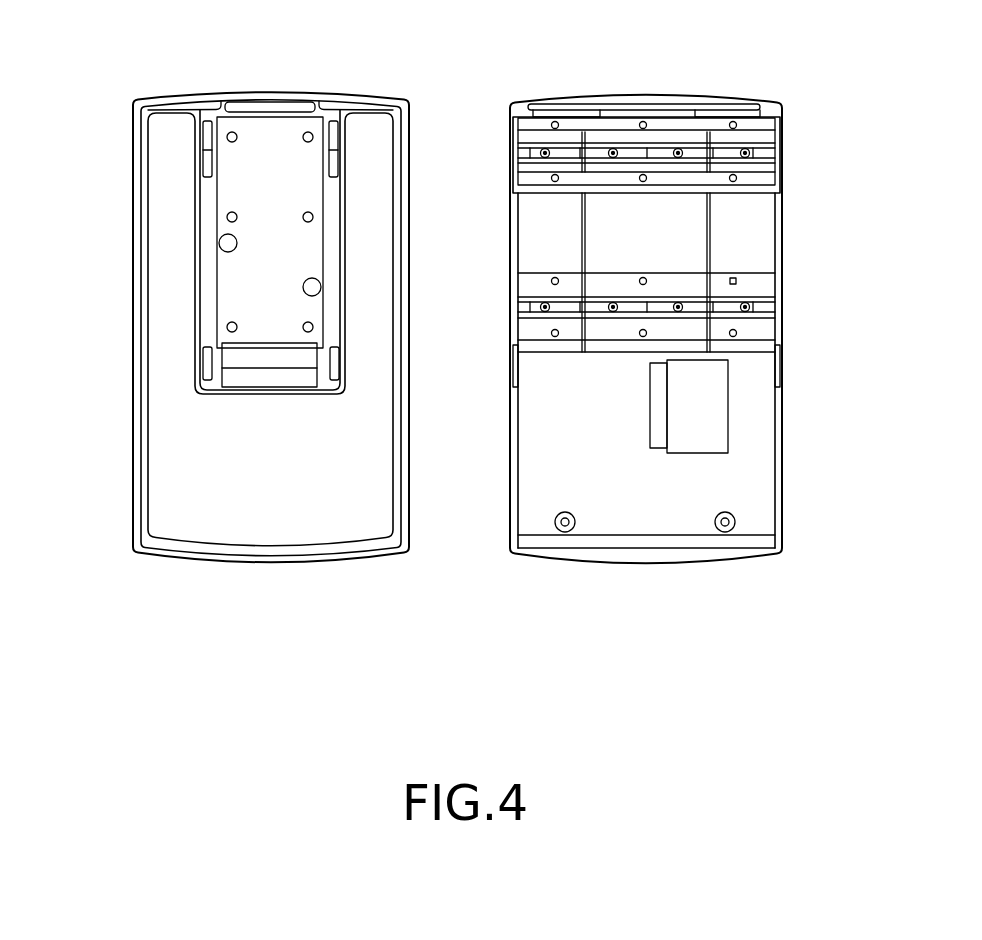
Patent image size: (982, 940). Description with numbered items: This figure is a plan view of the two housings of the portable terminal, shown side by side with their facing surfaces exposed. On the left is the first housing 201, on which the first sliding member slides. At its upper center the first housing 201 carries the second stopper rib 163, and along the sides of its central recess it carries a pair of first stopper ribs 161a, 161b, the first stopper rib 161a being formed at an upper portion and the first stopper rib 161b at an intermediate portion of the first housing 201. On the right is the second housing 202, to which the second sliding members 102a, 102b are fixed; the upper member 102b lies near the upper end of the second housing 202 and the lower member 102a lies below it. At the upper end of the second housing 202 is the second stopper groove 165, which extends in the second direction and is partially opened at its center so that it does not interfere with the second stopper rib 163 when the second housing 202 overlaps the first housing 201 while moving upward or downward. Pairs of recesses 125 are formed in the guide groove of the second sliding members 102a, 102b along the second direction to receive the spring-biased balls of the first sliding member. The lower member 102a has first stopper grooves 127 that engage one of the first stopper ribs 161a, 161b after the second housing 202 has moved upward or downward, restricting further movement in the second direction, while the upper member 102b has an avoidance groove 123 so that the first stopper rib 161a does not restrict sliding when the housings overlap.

The first housing 201 is at (116, 451).
The second housing 202 is at (793, 483).
The second stopper rib 163 is at (266, 104).
The first stopper rib 161a is at (205, 167).
The first stopper rib 161b is at (205, 363).
The second stopper groove 165 is at (578, 106).
The recesses 125 is at (544, 148).
The avoidance groove 123 is at (525, 184).
The first stopper grooves 127 is at (583, 292).
The second sliding member (lower member) 102a is at (749, 281).
The second sliding member (upper member) 102b is at (747, 137).